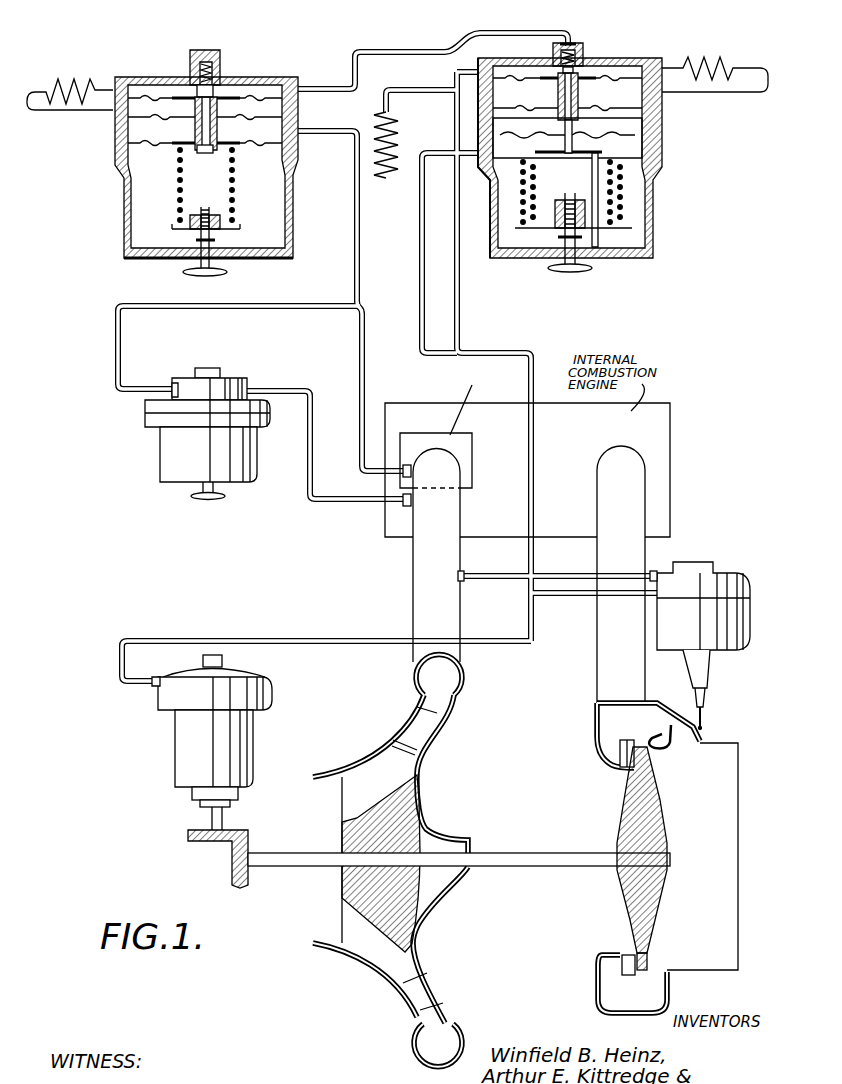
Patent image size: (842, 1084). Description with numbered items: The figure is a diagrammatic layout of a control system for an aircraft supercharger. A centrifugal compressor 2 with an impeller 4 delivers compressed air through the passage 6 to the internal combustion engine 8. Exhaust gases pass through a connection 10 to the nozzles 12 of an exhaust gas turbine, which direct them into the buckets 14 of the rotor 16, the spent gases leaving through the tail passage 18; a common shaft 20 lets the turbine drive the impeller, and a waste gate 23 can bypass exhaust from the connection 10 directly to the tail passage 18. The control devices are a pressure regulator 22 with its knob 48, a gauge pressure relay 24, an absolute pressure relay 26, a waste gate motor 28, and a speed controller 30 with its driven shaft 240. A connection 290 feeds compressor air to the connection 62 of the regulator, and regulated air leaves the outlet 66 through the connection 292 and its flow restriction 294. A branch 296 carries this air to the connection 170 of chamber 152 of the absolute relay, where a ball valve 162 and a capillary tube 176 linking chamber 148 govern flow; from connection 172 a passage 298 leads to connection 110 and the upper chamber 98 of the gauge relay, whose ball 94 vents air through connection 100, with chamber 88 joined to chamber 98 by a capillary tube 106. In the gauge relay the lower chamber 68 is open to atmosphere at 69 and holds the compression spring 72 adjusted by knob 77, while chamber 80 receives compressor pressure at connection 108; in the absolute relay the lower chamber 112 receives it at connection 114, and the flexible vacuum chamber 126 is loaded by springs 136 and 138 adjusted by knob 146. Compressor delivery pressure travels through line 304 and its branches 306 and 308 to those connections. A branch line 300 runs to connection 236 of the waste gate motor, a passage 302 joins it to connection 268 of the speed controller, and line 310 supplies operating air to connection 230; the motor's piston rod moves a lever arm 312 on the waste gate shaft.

The centrifugal compressor 2 is at (459, 861).
The impeller 4 is at (357, 885).
The passage 6 is at (414, 582).
The internal combustion engine 8 is at (495, 458).
The connection 10 is at (600, 659).
The nozzles 12 is at (622, 755).
The buckets 14 is at (640, 757).
The rotor 16 is at (653, 817).
The tail passage 18 is at (738, 810).
The common shaft 20 is at (515, 852).
The pressure regulator 22 is at (187, 436).
The waste gate 23 is at (667, 713).
The gauge pressure relay 24 is at (174, 150).
The absolute pressure relay 26 is at (616, 149).
The waste gate motor 28 is at (718, 639).
The speed controller 30 is at (186, 731).
The knob 48 is at (218, 497).
The connection 62 is at (255, 380).
The connection 66 is at (170, 387).
The lower chamber 68 is at (273, 208).
The atmospheric opening 69 is at (152, 258).
The compression spring 72 is at (237, 182).
The knob 77 is at (230, 273).
The chamber 80 is at (145, 133).
The chamber 88 is at (147, 110).
The ball 94 is at (219, 80).
The upper chamber 98 is at (165, 88).
The connection 100 is at (208, 62).
The capillary tube 106 is at (67, 80).
The connection 108 is at (293, 131).
The connection 110 is at (297, 87).
The lower chamber 112 is at (633, 237).
The connection 114 is at (482, 165).
The flexible vacuum chamber 126 is at (627, 135).
The spring 136 is at (523, 197).
The spring 138 is at (537, 197).
The knob 146 is at (593, 271).
The chamber 148 is at (617, 93).
The chamber 152 is at (623, 68).
The ball valve 162 is at (553, 53).
The connection 170 is at (478, 78).
The connection 172 is at (573, 43).
The capillary tube 176 is at (727, 58).
The connection 230 is at (673, 565).
The connection 236 is at (653, 598).
The driven shaft 240 is at (223, 816).
The connection 268 is at (160, 684).
The connection 290 is at (312, 406).
The connection 292 is at (248, 309).
The flow restriction 294 is at (393, 147).
The branch 296 is at (453, 72).
The passage 298 is at (380, 54).
The branch line 300 is at (497, 353).
The passage 302 is at (310, 639).
The line 304 is at (364, 397).
The branch 306 is at (356, 248).
The branch 308 is at (424, 268).
The line 310 is at (490, 574).
The lever arm 312 is at (707, 738).